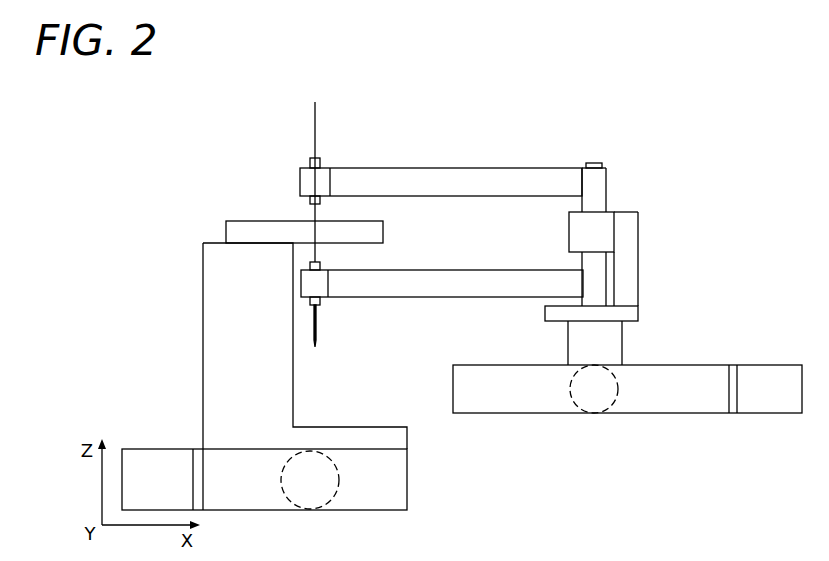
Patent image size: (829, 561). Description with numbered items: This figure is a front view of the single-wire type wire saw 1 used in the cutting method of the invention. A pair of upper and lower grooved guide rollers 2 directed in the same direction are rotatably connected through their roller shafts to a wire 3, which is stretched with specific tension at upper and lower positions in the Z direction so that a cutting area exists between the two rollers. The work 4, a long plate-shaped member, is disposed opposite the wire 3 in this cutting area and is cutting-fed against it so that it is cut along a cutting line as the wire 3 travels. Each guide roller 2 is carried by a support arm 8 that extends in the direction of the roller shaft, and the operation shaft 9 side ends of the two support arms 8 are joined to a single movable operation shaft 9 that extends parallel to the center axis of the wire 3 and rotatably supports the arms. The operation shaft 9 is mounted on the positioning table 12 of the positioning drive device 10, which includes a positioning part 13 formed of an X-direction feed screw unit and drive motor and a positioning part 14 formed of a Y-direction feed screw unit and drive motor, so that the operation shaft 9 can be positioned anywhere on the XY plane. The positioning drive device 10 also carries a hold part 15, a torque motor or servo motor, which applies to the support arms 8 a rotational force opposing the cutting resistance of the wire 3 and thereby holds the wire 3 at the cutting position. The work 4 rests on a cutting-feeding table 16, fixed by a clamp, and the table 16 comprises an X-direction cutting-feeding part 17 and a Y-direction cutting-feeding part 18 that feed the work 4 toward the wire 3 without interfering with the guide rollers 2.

The single-wire type wire saw 1 is at (198, 159).
The grooved guide roller 2 is at (310, 162).
The wire 3 is at (310, 115).
The work 4 is at (386, 228).
The support arm 8 is at (472, 167).
The operation shaft 9 is at (596, 163).
The positioning drive device 10 is at (702, 198).
The positioning table 12 is at (640, 312).
The positioning part 13 is at (698, 363).
The positioning part 14 is at (575, 407).
The hold part 15 is at (568, 228).
The cutting-feeding table 16 is at (202, 254).
The X-direction cutting-feeding part 17 is at (166, 448).
The Y-direction cutting-feeding part 18 is at (339, 470).